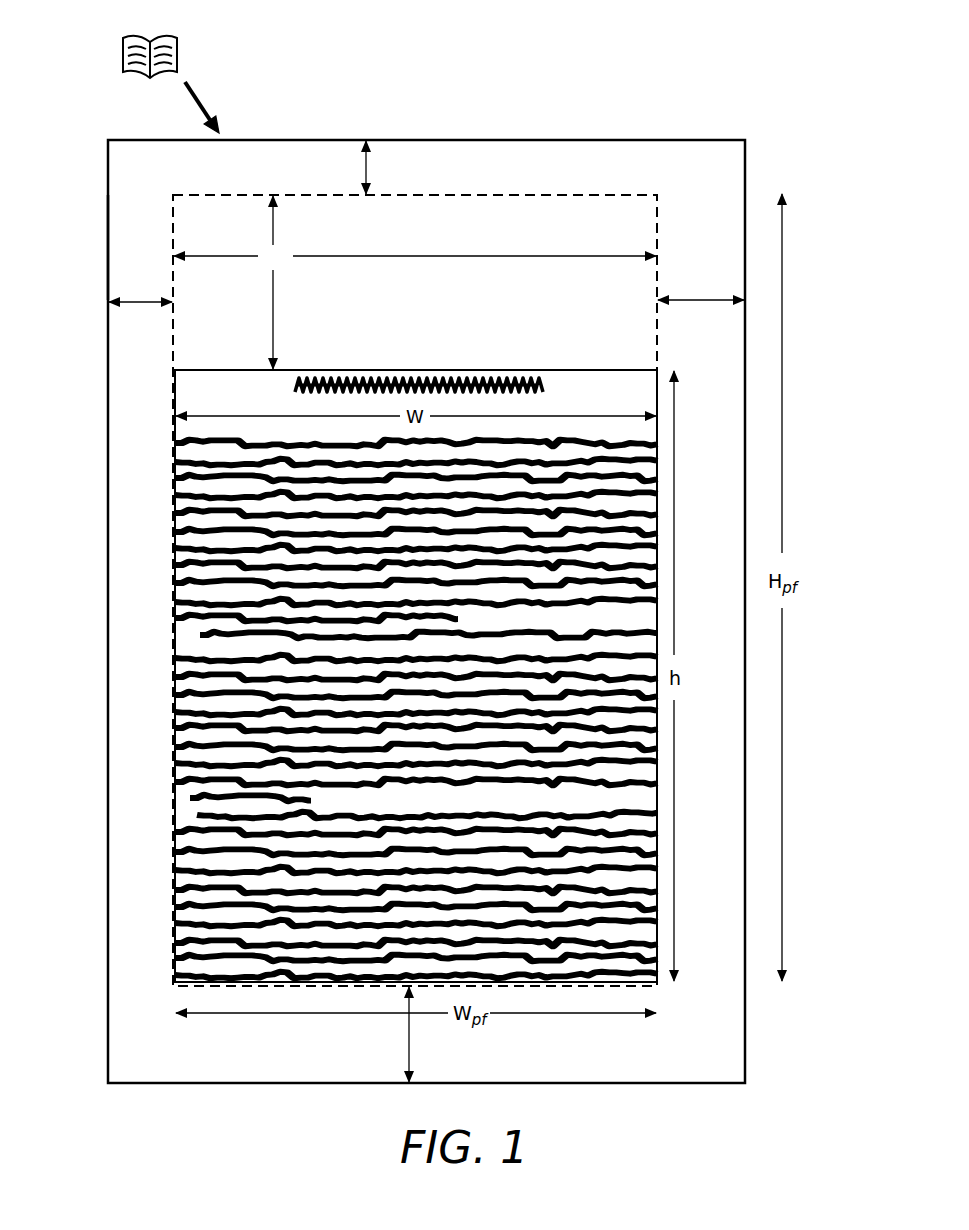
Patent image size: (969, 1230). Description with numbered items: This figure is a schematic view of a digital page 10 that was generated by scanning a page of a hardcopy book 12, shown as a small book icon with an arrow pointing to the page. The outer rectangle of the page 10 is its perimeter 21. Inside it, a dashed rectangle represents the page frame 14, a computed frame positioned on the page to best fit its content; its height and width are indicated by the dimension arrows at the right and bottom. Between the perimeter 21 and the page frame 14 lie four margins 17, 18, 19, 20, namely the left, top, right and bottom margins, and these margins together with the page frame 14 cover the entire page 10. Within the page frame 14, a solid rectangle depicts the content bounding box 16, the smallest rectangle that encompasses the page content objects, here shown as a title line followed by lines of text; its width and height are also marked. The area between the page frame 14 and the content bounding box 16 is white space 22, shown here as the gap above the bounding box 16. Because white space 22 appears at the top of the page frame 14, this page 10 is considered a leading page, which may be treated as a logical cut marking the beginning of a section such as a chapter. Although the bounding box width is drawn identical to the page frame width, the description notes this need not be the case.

The digital page 10 is at (94, 161).
The hardcopy book 12 is at (180, 47).
The page frame 14 is at (657, 240).
The content bounding box 16 is at (426, 369).
The margin 17 is at (142, 304).
The margin 18 is at (368, 167).
The margin 19 is at (698, 302).
The margin 20 is at (409, 1043).
The perimeter 21 is at (108, 252).
The white space 22 is at (415, 282).